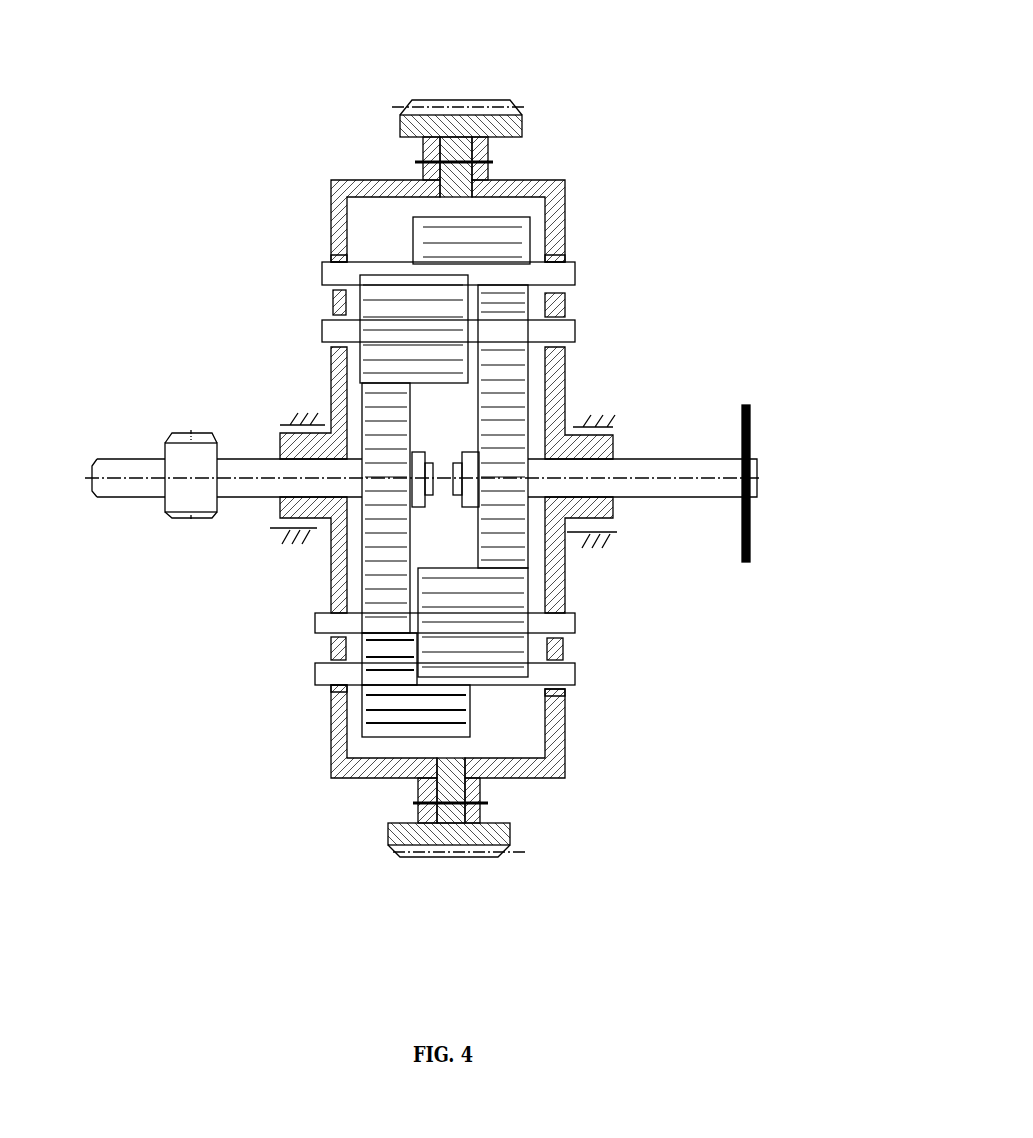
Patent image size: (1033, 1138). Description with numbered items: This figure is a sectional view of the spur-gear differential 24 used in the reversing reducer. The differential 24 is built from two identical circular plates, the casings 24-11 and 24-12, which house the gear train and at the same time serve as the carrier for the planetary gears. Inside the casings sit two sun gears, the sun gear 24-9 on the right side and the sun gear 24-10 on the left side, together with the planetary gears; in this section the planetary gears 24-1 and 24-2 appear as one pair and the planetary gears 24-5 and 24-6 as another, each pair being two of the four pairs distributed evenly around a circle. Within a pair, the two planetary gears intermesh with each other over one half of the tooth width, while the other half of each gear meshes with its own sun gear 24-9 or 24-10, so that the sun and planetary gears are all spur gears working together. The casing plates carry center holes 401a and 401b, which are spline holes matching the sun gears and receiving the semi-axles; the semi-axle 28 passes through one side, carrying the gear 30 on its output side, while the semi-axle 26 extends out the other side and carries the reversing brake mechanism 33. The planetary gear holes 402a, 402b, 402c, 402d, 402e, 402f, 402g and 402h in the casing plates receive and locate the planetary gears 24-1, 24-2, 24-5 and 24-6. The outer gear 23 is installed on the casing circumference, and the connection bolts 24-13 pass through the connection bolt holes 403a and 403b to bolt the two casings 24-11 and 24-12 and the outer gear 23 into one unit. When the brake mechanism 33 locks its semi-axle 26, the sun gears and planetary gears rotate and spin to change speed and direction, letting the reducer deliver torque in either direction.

The outer gear 23 is at (470, 123).
The differential 24 is at (442, 413).
The planetary gear 24-1 is at (400, 318).
The planetary gear 24-2 is at (508, 243).
The planetary gear 24-5 is at (511, 603).
The planetary gear 24-6 is at (393, 703).
The sun gear 24-9 is at (512, 438).
The sun gear 24-10 is at (378, 568).
The casing 24-11 is at (557, 735).
The casing 24-12 is at (342, 205).
The connection bolt 24-13 is at (493, 162).
The semi-axle 26 is at (628, 478).
The semi-axle 28 is at (263, 485).
The gear 30 is at (188, 495).
The reversing brake mechanism 33 is at (750, 438).
The center hole 401a is at (281, 458).
The center hole 401b is at (601, 460).
The planetary gear hole 402a is at (332, 345).
The planetary gear hole 402b is at (563, 317).
The planetary gear hole 402c is at (332, 262).
The planetary gear hole 402d is at (565, 260).
The planetary gear hole 402e is at (327, 611).
The planetary gear hole 402f is at (568, 634).
The planetary gear hole 402g is at (327, 685).
The planetary gear hole 402h is at (561, 688).
The connection bolt hole 403a is at (422, 168).
The connection bolt hole 403b is at (415, 800).